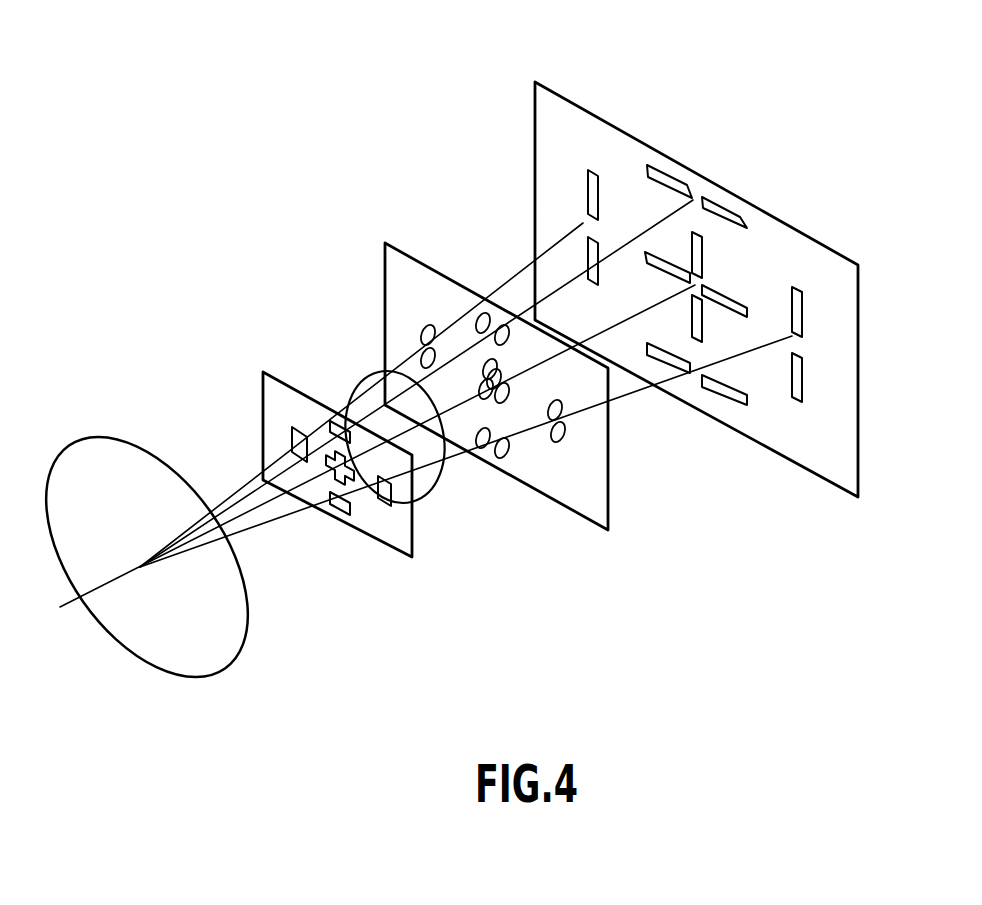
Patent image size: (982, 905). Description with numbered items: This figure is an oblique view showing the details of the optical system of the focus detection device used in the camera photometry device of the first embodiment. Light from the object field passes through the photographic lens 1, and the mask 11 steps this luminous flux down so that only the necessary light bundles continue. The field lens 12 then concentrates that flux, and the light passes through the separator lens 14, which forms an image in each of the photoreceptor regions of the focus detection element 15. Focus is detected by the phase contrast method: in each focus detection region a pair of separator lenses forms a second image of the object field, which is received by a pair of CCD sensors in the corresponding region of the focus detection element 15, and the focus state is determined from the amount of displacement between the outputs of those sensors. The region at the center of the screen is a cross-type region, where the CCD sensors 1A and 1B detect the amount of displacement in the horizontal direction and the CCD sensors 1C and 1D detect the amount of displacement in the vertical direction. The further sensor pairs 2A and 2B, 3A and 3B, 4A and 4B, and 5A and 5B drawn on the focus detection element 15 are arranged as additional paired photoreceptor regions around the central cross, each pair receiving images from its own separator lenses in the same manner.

The photographic lens 1 is at (108, 433).
The mask 11 is at (412, 533).
The field lens 12 is at (352, 378).
The separator lens 14 is at (562, 508).
The focus detection element 15 is at (585, 110).
The CCD sensor 1A is at (673, 276).
The CCD sensor 1B is at (722, 295).
The CCD sensor 1C is at (703, 250).
The CCD sensor 1D is at (703, 313).
The vertical slit 2A is at (802, 310).
The vertical slit 2B is at (802, 375).
The vertical slit 3A is at (588, 193).
The vertical slit 3B is at (588, 262).
The inclined slit 4A is at (668, 368).
The inclined slit 4B is at (720, 396).
The inclined slit 5A is at (665, 175).
The inclined slit 5B is at (722, 208).